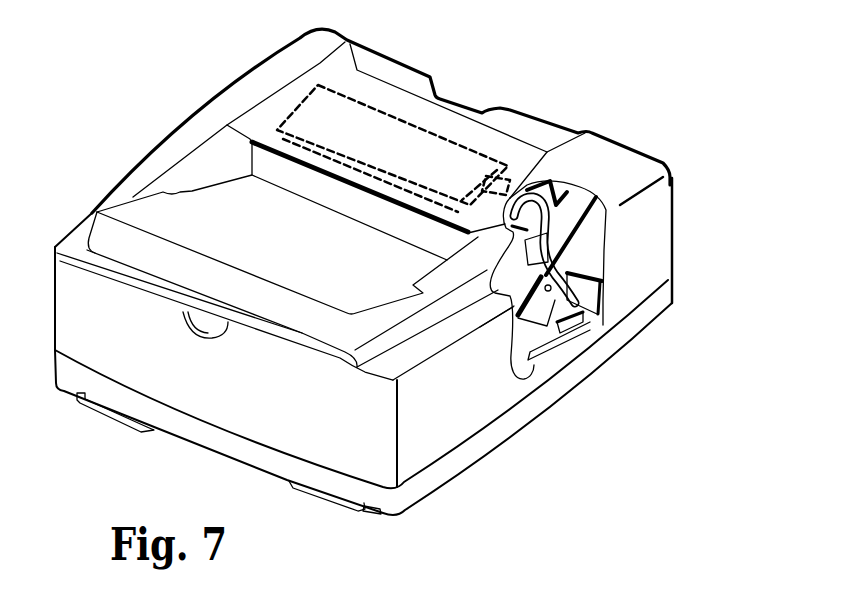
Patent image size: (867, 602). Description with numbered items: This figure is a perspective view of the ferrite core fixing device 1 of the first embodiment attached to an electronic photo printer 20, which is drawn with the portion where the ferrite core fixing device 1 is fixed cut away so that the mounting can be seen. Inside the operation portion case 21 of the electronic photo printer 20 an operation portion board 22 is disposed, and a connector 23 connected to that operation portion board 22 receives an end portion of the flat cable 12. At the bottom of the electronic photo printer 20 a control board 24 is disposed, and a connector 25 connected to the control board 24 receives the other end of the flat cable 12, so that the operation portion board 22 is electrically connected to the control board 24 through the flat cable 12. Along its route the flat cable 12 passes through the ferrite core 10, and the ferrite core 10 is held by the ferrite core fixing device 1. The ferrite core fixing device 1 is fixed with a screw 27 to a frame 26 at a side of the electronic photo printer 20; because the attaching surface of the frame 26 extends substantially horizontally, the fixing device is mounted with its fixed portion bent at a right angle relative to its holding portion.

The ferrite core fixing device 1 is at (511, 355).
The ferrite core 10 is at (543, 245).
The flat cable 12 is at (567, 302).
The electronic photo printer 20 is at (597, 132).
The operation portion case 21 is at (380, 93).
The operation portion board 22 is at (423, 142).
The connector 23 is at (497, 190).
The control board 24 is at (514, 370).
The connector 25 is at (576, 316).
The frame 26 is at (548, 262).
The screw 27 is at (533, 350).